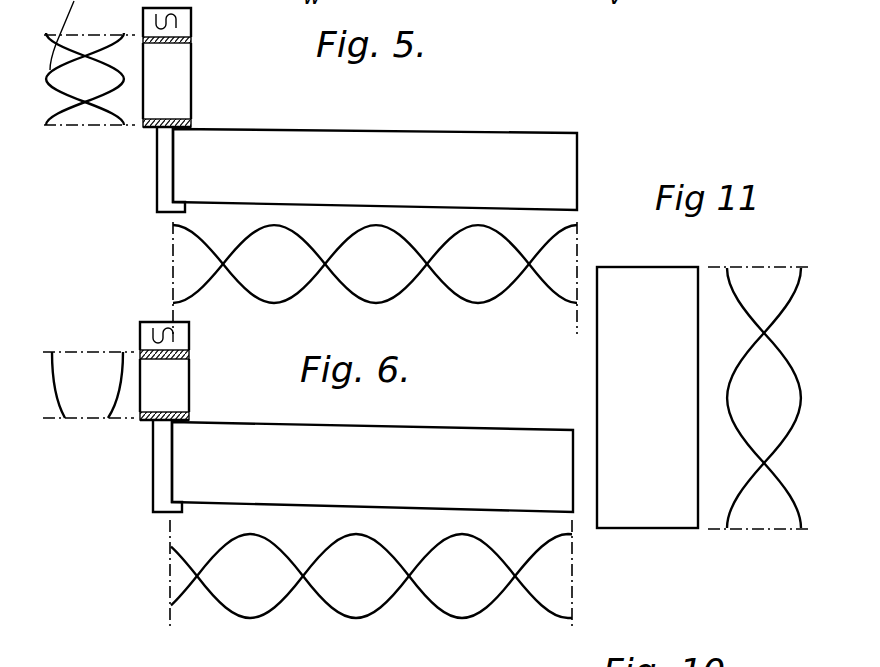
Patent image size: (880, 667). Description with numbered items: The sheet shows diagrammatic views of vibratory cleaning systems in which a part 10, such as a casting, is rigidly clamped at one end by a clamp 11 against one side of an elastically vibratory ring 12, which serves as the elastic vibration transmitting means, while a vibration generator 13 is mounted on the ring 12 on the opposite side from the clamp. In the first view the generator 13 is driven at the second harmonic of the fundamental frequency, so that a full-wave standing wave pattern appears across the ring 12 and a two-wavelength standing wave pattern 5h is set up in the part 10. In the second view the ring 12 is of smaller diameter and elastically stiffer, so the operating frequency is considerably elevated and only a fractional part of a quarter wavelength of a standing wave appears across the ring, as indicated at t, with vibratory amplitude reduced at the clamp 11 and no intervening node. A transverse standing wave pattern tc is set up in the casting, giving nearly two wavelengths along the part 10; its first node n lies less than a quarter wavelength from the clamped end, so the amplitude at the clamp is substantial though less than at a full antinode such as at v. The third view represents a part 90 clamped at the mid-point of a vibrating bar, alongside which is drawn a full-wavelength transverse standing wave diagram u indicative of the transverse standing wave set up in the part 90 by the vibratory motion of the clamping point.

In FIG. 5, the part 10 is at (500, 140).
In FIG. 6, the part 10 is at (418, 438).
In FIG. 5, the clamp 11 is at (157, 180).
In FIG. 5, the elastically vibratory ring 12 is at (182, 82).
In FIG. 6, the elastically vibratory ring 12 is at (182, 397).
In FIG. 5, the vibration generator 13 is at (191, 31).
In FIG. 6, the vibration generator 13 is at (189, 342).
In FIG. 5, the standing wave pattern 5h is at (440, 287).
In FIG. 11, the part 90 is at (648, 280).
In FIG. 11, the transverse standing wave diagram u is at (780, 352).
In FIG. 6, the standing wave across the ring t is at (57, 398).
In FIG. 6, the node n is at (196, 580).
In FIG. 6, the antinode v is at (250, 617).
In FIG. 6, the transverse standing wave pattern tc is at (387, 607).